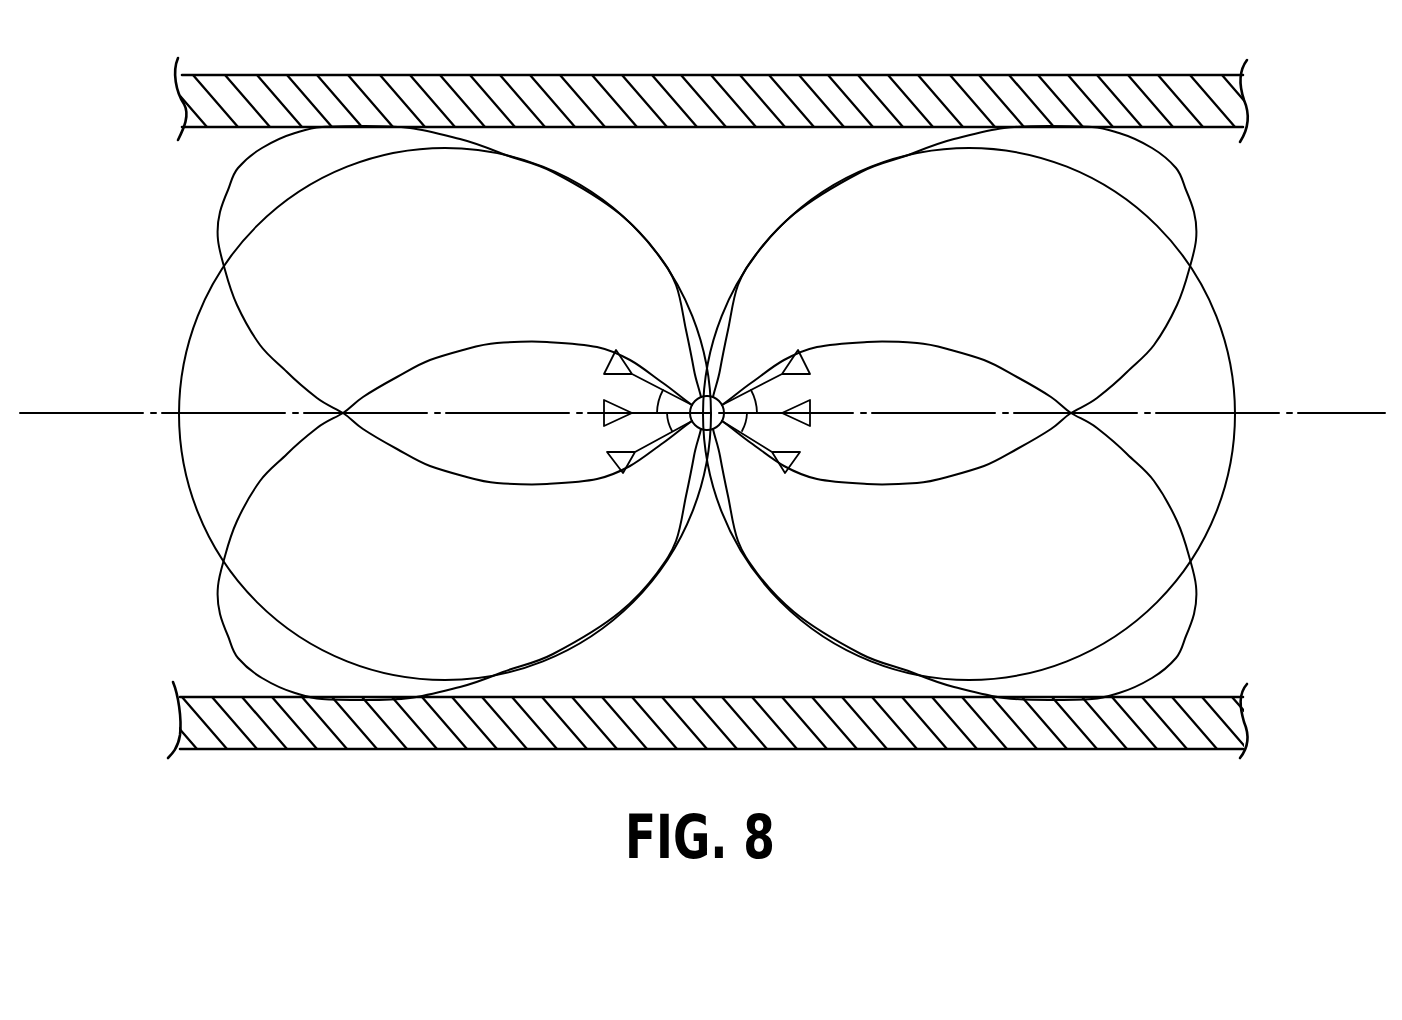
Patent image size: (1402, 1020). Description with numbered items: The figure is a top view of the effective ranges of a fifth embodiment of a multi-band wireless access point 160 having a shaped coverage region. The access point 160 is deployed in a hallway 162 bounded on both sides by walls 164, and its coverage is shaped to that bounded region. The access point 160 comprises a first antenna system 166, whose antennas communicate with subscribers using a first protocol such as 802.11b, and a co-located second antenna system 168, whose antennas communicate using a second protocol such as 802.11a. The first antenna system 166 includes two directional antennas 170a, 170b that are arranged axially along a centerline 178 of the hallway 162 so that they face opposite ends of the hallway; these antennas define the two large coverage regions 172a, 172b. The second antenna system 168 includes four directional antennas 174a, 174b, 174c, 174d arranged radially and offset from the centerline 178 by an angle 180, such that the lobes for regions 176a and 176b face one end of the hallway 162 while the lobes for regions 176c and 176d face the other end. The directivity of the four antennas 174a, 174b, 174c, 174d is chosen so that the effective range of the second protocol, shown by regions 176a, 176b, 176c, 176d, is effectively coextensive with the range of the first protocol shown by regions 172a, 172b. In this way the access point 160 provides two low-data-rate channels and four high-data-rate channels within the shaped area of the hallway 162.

The multi-band wireless access point 160 is at (697, 428).
The hallway 162 is at (1302, 518).
The walls 164 is at (1172, 75).
The first antenna system 166 is at (697, 521).
The second antenna system 168 is at (703, 575).
The directional antenna 170a is at (810, 405).
The directional antenna 170b is at (598, 416).
The region 172a is at (1198, 399).
The region 172b is at (255, 397).
The directional antenna 174a is at (793, 456).
The directional antenna 174b is at (798, 349).
The directional antenna 174c is at (613, 349).
The directional antenna 174d is at (620, 474).
The region 176a is at (1067, 648).
The region 176b is at (990, 209).
The region 176c is at (437, 213).
The region 176d is at (404, 639).
The centerline 178 is at (1332, 412).
The angle 180 is at (650, 400).